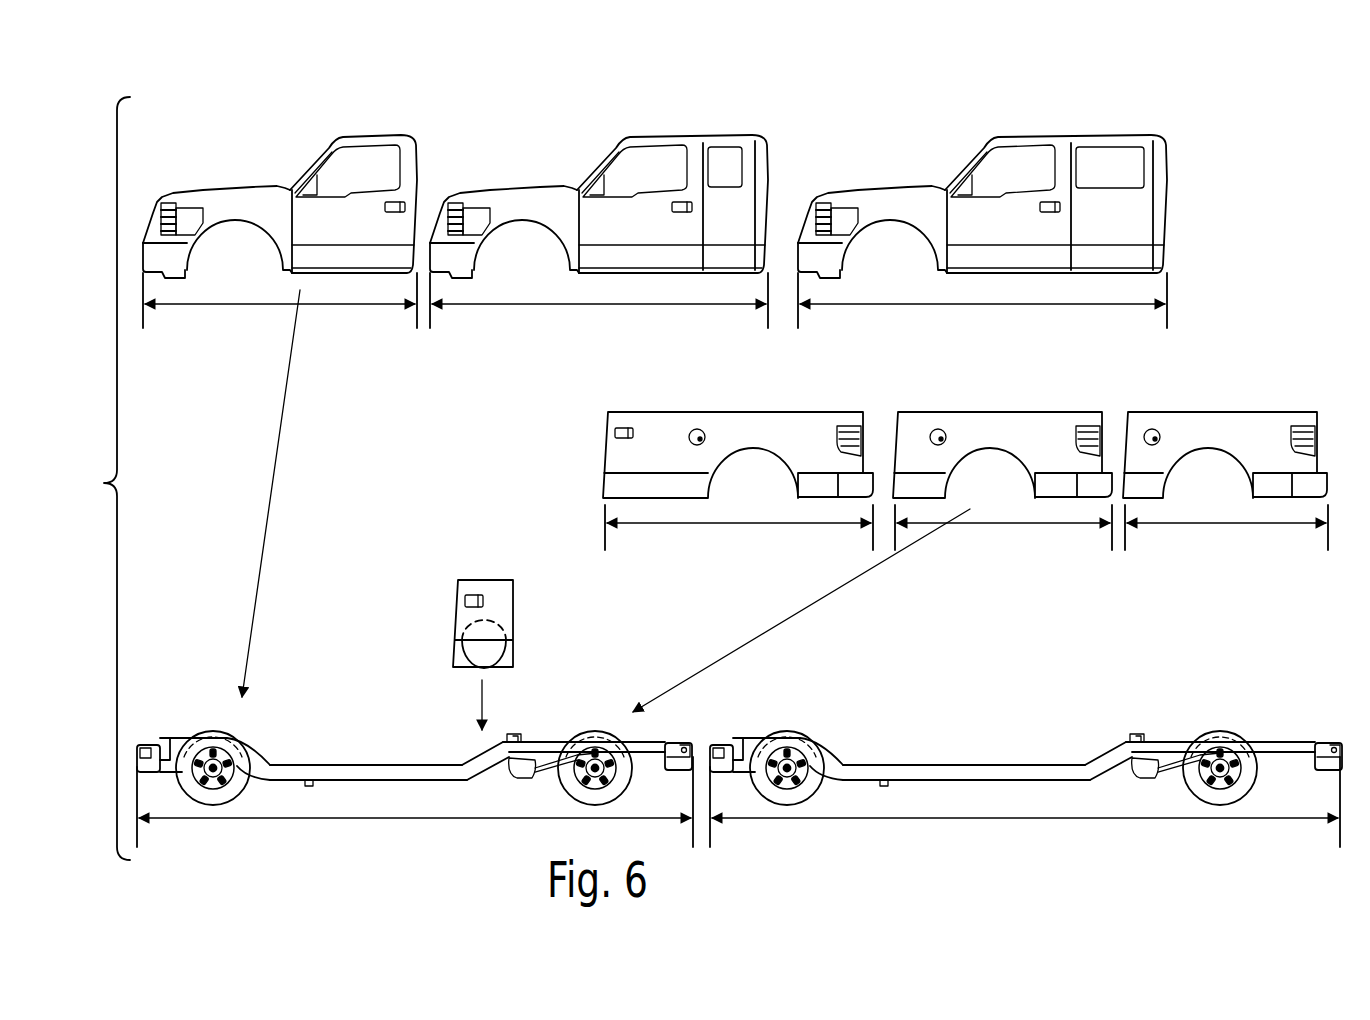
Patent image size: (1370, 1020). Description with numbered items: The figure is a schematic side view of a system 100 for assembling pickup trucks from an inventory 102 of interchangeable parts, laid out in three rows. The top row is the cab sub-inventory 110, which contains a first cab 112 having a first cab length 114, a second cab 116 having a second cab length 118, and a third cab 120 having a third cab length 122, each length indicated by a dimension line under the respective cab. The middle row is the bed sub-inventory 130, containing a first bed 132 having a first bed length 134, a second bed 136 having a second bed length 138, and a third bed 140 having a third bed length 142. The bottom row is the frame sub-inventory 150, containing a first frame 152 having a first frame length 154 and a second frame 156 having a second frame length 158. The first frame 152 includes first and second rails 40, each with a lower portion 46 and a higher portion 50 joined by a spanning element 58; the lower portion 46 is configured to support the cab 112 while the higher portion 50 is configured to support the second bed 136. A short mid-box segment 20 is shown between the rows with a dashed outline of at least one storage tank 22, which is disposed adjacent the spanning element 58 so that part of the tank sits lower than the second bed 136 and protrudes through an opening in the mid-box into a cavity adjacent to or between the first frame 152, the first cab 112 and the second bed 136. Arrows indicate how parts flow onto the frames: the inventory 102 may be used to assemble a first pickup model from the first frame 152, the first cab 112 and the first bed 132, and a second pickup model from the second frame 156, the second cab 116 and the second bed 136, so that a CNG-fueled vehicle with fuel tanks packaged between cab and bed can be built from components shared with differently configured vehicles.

The wheel housing segment 20 is at (508, 597).
The storage tank 22 is at (508, 620).
The first and second rail 40 is at (368, 775).
The lower portion 46 is at (215, 759).
The higher portion 50 is at (584, 756).
The spanning element 58 is at (485, 761).
The system 100 is at (1062, 90).
The inventory 102 is at (1157, 93).
The cab sub-inventory 110 is at (1188, 326).
The first cab 112 is at (363, 133).
The first cab length 114 is at (343, 307).
The second cab 116 is at (672, 133).
The second cab length 118 is at (613, 307).
The third cab 120 is at (1022, 133).
The third cab length 122 is at (972, 307).
The bed sub-inventory 130 is at (550, 466).
The first bed 132 is at (768, 410).
The first bed length 134 is at (737, 527).
The second bed 136 is at (1020, 410).
The second bed length 138 is at (1015, 527).
The third bed 140 is at (1218, 410).
The third bed length 142 is at (1230, 527).
The frame sub-inventory 150 is at (1178, 672).
The first frame 152 is at (414, 743).
The first frame length 154 is at (450, 820).
The second frame 156 is at (1000, 764).
The second frame length 158 is at (1090, 820).